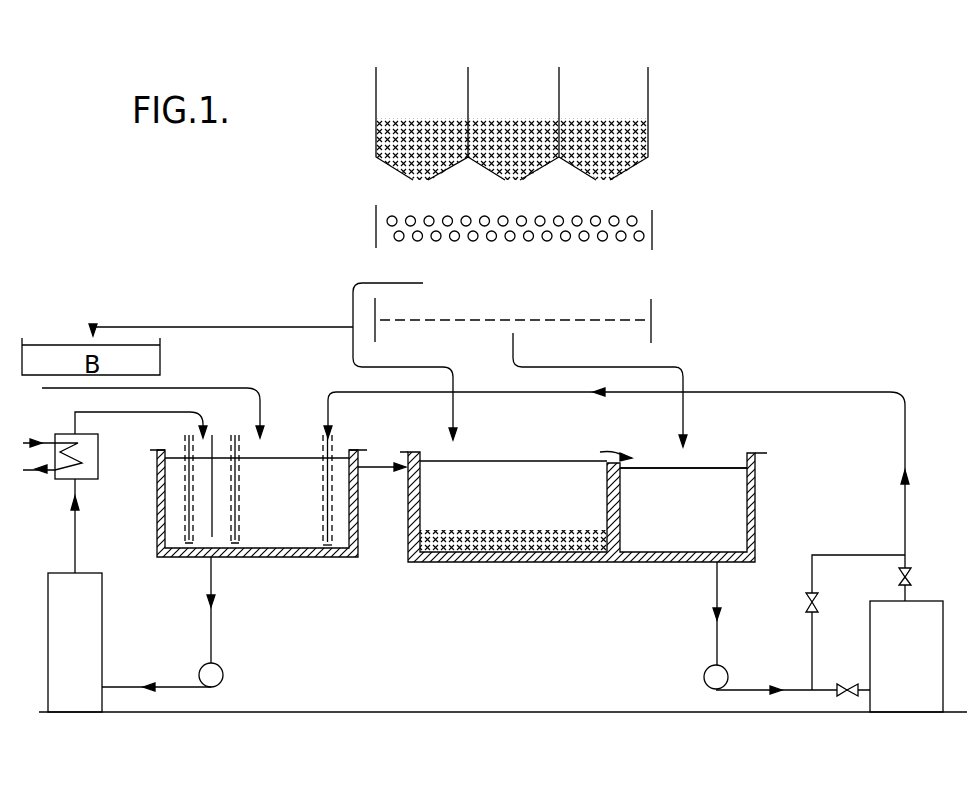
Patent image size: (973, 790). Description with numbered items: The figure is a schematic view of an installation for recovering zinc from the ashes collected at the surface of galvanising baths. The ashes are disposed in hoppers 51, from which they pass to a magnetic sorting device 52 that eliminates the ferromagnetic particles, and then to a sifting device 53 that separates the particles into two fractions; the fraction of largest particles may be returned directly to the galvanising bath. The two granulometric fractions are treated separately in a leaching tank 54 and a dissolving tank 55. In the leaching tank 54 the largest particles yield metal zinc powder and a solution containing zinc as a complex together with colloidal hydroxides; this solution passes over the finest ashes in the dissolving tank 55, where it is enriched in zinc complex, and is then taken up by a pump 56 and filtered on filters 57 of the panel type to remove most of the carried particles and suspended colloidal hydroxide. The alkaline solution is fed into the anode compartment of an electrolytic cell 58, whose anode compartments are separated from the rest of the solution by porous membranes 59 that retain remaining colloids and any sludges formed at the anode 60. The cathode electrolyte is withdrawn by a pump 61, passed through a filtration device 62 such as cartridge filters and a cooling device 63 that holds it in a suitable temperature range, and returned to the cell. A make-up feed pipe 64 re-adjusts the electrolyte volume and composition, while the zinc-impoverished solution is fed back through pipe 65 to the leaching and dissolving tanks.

The hoppers 51 is at (649, 101).
The magnetic sorting device 52 is at (653, 228).
The sifting device 53 is at (652, 320).
The leaching tank 54 is at (532, 508).
The dissolving tank 55 is at (690, 508).
The pump 56 is at (705, 675).
The filters 57 is at (915, 670).
The electrolytic cell 58 is at (266, 523).
The porous membranes 59 is at (337, 527).
The anode 60 is at (333, 515).
The pump 61 is at (222, 668).
The filtration device 62 is at (88, 605).
The cooling device 63 is at (98, 442).
The make-up feed pipe 64 is at (200, 385).
The pipe 65 is at (370, 465).